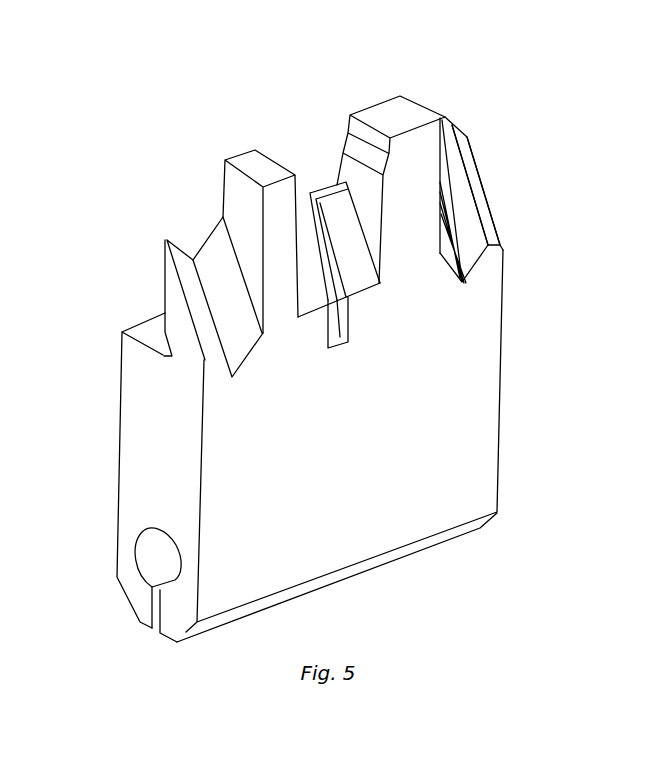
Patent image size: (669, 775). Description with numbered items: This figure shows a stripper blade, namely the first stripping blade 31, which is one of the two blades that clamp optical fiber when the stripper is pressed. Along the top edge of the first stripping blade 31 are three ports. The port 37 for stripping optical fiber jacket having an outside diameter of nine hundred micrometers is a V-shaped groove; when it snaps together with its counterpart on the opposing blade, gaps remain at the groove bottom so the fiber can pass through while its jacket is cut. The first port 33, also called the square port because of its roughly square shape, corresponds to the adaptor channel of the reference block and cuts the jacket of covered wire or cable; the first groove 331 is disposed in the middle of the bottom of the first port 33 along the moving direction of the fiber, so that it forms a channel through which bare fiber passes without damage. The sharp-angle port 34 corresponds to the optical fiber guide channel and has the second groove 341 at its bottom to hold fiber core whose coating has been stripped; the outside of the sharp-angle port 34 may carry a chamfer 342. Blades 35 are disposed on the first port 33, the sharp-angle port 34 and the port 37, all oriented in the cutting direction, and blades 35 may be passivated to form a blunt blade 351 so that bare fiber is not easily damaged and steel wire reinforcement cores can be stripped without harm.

The first stripping blade 31 is at (238, 484).
The first port 33 is at (350, 253).
The first groove 331 is at (338, 337).
The sharp-angle port 34 is at (460, 208).
The second groove 341 is at (468, 277).
The chamfer 342 is at (473, 162).
The blades 35 is at (178, 247).
The blunt blade 351 is at (333, 183).
The 900 μm optical fiber jacket stripping port 37 is at (228, 305).